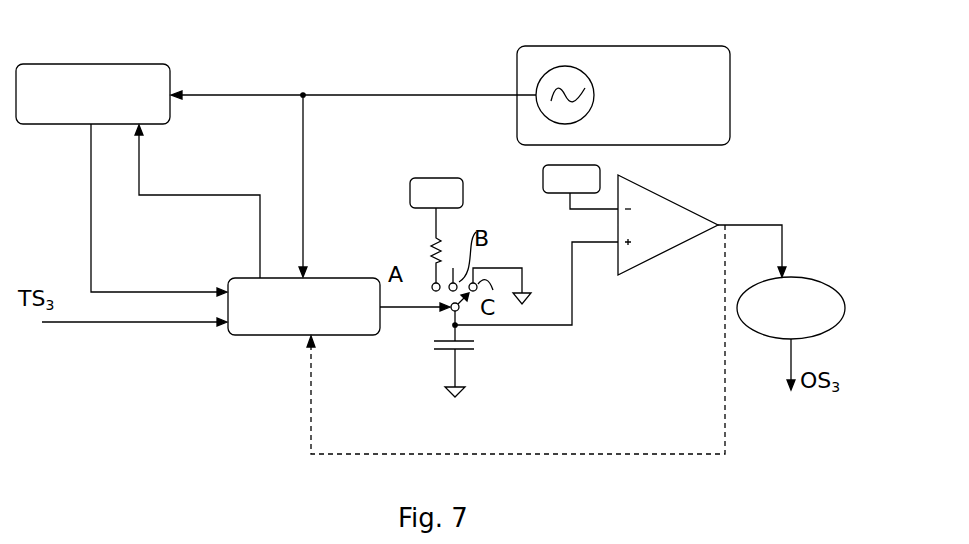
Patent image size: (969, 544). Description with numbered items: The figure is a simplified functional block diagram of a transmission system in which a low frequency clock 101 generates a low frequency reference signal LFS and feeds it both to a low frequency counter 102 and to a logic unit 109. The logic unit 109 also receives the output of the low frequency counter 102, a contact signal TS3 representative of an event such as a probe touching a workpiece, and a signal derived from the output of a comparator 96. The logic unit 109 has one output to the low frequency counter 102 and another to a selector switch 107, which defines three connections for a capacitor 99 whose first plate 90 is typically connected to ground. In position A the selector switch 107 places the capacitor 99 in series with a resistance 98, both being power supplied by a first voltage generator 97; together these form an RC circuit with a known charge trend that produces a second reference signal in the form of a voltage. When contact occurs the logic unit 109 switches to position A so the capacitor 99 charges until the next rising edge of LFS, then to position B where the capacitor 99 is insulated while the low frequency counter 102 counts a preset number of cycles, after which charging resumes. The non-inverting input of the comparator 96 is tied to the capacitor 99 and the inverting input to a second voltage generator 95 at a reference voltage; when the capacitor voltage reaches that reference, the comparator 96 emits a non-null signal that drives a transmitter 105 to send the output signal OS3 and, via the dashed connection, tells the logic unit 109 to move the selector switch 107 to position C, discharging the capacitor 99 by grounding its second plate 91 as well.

The first plate 90 is at (443, 350).
The second plate 91 is at (470, 336).
The second voltage generator 95 is at (557, 190).
The comparator 96 is at (647, 238).
The first voltage generator 97 is at (437, 182).
The resistance 98 is at (421, 247).
The capacitor 99 is at (500, 390).
The low frequency clock 101 is at (530, 57).
The low frequency counter 102 is at (145, 71).
The transmitter 105 is at (797, 278).
The selector switch 107 is at (452, 310).
The logic unit 109 is at (248, 318).